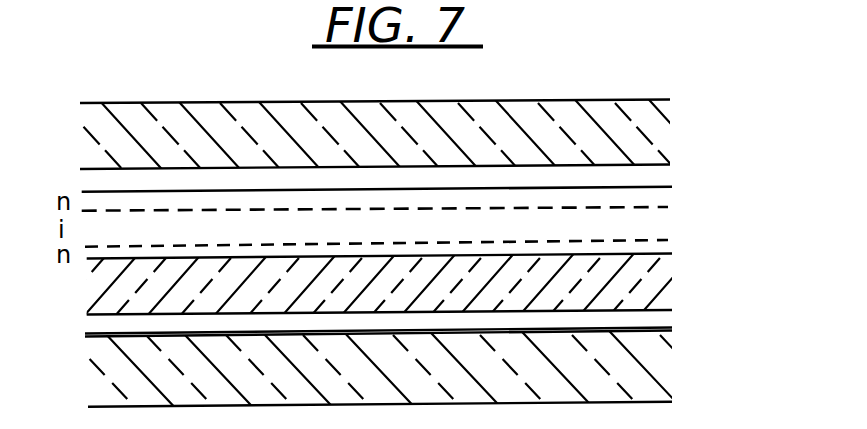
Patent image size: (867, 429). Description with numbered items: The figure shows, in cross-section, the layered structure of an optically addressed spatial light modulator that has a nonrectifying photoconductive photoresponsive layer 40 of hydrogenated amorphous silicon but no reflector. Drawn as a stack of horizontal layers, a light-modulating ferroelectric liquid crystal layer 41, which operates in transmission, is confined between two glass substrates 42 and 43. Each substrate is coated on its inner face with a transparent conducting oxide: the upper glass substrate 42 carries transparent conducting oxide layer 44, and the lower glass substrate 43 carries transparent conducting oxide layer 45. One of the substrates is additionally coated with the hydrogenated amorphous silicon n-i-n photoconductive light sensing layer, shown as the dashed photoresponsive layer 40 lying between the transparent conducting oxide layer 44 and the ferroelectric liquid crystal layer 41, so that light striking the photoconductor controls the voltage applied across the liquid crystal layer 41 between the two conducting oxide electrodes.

The photoresponsive layer 40 is at (643, 225).
The ferroelectric liquid crystal layer 41 is at (628, 290).
The glass substrate 42 is at (637, 138).
The glass substrate 43 is at (637, 370).
The transparent conducting oxide layer 44 is at (645, 175).
The transparent conducting oxide layer 45 is at (643, 319).